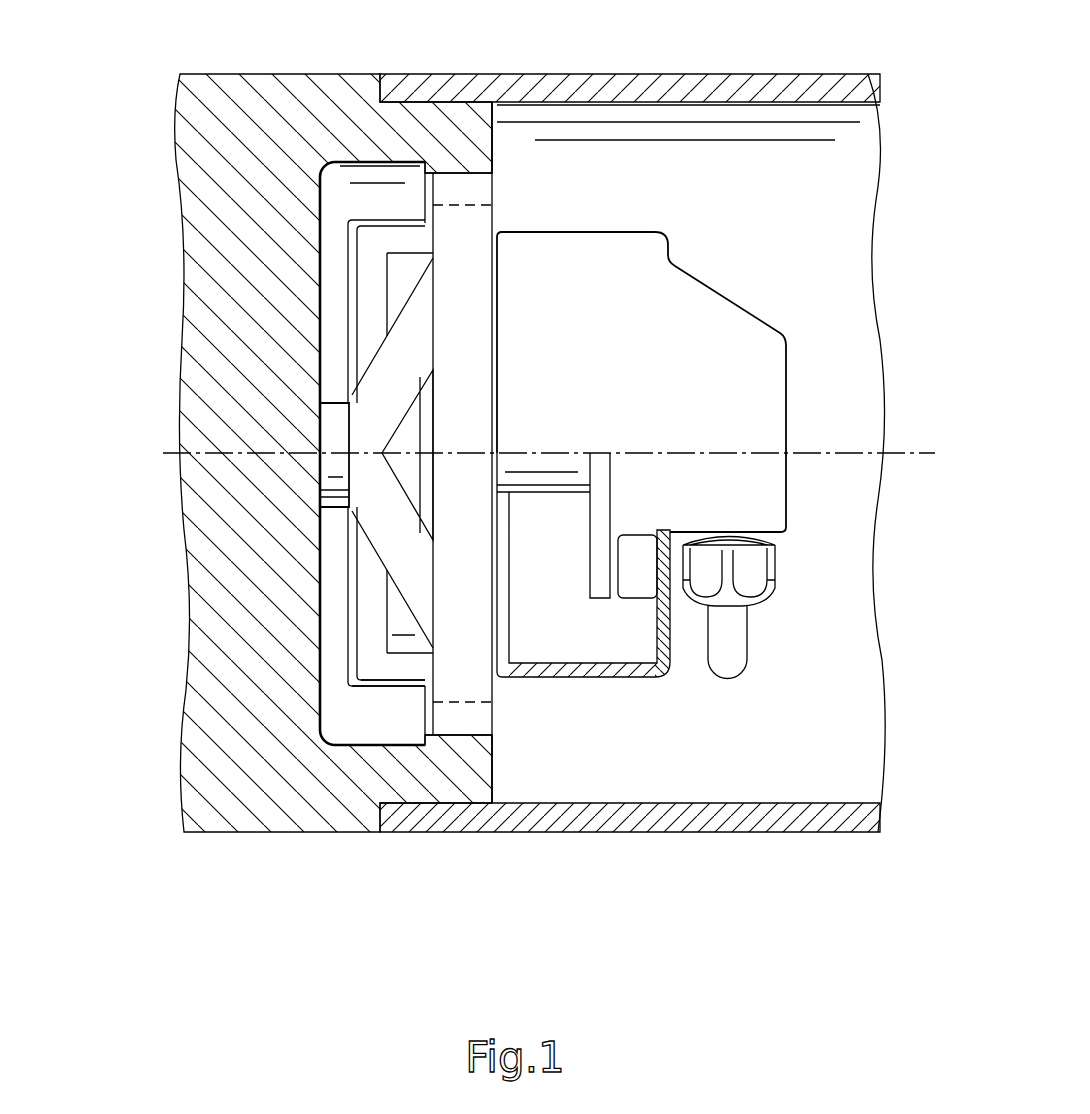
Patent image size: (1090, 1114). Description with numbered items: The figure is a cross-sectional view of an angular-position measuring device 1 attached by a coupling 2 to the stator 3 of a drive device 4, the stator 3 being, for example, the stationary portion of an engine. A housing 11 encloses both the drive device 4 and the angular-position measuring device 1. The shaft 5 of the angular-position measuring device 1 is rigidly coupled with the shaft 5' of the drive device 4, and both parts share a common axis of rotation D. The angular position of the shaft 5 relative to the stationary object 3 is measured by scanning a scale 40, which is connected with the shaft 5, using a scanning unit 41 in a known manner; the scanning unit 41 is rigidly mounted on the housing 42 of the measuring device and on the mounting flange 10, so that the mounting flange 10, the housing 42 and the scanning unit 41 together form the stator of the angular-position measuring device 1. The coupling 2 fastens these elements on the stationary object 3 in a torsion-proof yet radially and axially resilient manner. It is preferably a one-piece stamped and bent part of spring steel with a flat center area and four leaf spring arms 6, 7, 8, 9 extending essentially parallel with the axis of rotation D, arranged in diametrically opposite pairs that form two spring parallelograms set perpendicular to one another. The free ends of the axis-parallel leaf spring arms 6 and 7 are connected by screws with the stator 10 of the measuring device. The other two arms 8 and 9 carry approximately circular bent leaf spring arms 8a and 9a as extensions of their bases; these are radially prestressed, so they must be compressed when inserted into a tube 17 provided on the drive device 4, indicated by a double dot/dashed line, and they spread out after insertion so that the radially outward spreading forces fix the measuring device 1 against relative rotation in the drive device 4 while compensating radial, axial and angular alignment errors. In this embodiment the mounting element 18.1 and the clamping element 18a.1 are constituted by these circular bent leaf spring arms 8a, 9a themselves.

The angular-position measuring device 1 is at (628, 372).
The coupling 2 is at (494, 217).
The stator of the drive device 3 is at (278, 87).
The drive device 4 is at (177, 125).
The shaft of the angular-position measuring device 5 is at (543, 514).
The shaft of the drive device 5' is at (301, 450).
The leaf spring arm 6 is at (398, 687).
The leaf spring arm 7 is at (392, 222).
The leaf spring arm 8 is at (432, 543).
The leaf spring arm 9 is at (432, 543).
The circular bent leaf spring arm 8a is at (463, 723).
The circular bent leaf spring arm 9a is at (469, 543).
The stator of the angular-position measuring device 10 is at (583, 599).
The housing 11 is at (775, 822).
The tube 17 is at (425, 731).
The mounting element 18.1 is at (495, 96).
The clamping element 18a.1 is at (463, 190).
The scale 40 is at (594, 572).
The scanning unit 41 is at (637, 543).
The housing of the angular-position measuring device 42 is at (633, 668).
The axis of rotation D is at (915, 450).